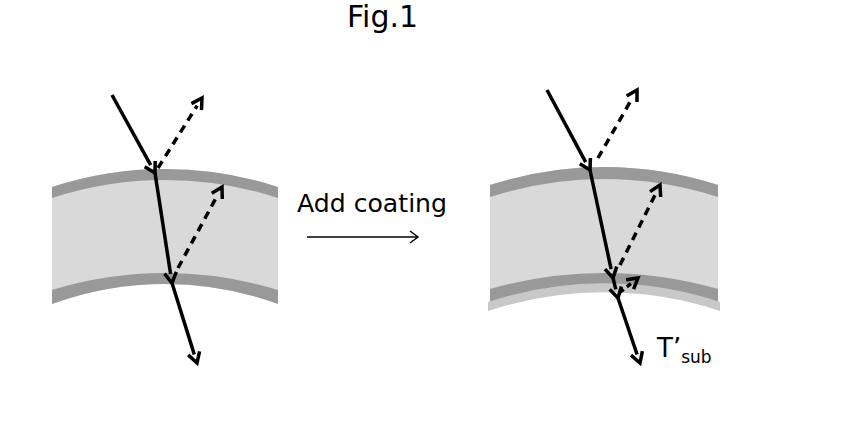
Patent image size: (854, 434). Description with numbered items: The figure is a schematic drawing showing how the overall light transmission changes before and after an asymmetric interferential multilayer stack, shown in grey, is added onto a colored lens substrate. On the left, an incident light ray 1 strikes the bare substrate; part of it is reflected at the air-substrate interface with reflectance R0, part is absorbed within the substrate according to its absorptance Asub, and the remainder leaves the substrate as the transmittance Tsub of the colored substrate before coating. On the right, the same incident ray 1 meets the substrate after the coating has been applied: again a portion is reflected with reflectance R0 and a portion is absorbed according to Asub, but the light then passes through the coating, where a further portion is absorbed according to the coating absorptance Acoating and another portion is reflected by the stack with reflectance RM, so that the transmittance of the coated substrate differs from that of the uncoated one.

The incident light ray 1 is at (329, 128).
The reflectance between air and outmost surface of the lens substrate R0 is at (421, 183).
The absorptance of the lens substrate Asub is at (385, 235).
The absorptance of the asymmetric interferential stack Acoating is at (582, 307).
The transmittance of the colored lens substrate before coating Tsub is at (215, 330).
The reflectance of the asymmetric interferential stack RM is at (601, 312).